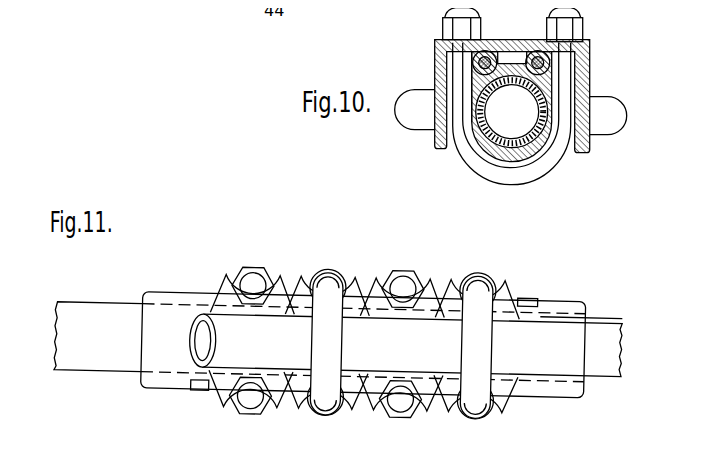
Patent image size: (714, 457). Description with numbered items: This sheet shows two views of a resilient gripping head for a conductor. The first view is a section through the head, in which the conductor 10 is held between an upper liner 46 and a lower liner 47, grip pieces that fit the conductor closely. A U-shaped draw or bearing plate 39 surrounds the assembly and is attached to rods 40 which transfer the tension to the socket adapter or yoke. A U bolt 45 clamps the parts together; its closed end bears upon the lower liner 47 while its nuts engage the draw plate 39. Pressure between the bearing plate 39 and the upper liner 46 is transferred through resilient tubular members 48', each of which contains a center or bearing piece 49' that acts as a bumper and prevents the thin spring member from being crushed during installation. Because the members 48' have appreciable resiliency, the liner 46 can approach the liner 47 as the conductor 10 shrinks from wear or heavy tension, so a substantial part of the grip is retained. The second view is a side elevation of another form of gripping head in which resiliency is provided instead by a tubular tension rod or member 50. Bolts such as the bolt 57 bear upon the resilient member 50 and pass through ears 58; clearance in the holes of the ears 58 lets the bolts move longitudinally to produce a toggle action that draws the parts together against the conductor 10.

In FIG. 10, the pipe 10 is at (530, 160).
In FIG. 11, the pipe 10 is at (97, 366).
In FIG. 10, the draw plate 39 is at (587, 72).
In FIG. 10, the rods 40 is at (418, 122).
In FIG. 10, the bolt 45 is at (520, 172).
In FIG. 10, the liner 46 is at (473, 75).
In FIG. 10, the liner 47 is at (495, 162).
In FIG. 10, the resilient tubular member 48' is at (478, 41).
In FIG. 10, the filler 49' is at (551, 41).
In FIG. 11, the tubular tension rod 50 is at (592, 320).
In FIG. 11, the bolt 57 is at (477, 384).
In FIG. 11, the ears 58 is at (462, 415).